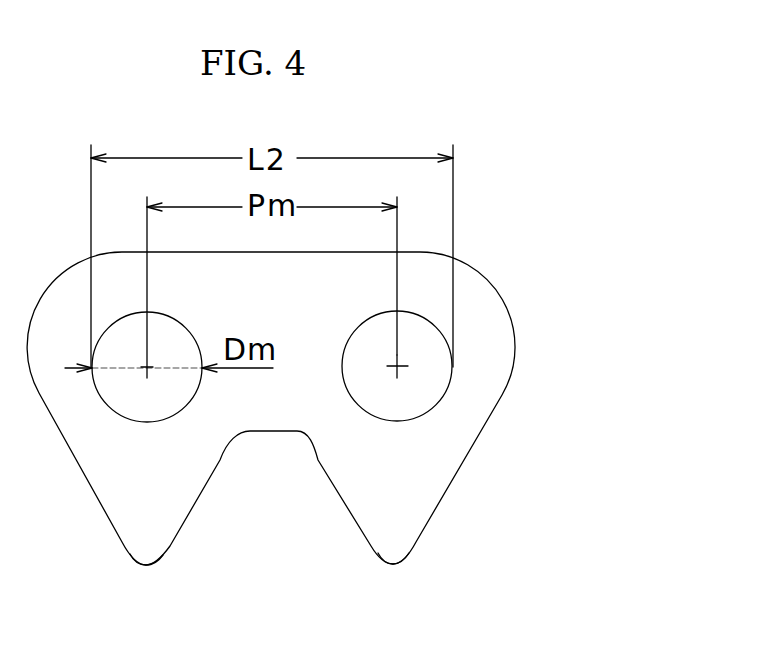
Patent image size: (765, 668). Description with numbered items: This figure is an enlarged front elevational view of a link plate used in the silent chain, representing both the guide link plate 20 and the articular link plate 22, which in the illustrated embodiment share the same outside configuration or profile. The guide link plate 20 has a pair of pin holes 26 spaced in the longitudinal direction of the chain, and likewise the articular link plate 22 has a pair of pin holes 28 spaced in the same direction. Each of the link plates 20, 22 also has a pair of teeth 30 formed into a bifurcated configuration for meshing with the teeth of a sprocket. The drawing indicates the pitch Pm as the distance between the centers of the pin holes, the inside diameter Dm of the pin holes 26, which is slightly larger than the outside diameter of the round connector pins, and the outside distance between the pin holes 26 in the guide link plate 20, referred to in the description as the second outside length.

The guide link plate 20 is at (522, 312).
The articular link plate 22 is at (271, 408).
The pin holes 26 is at (436, 402).
The pin holes 28 is at (272, 366).
The teeth 30 is at (148, 547).